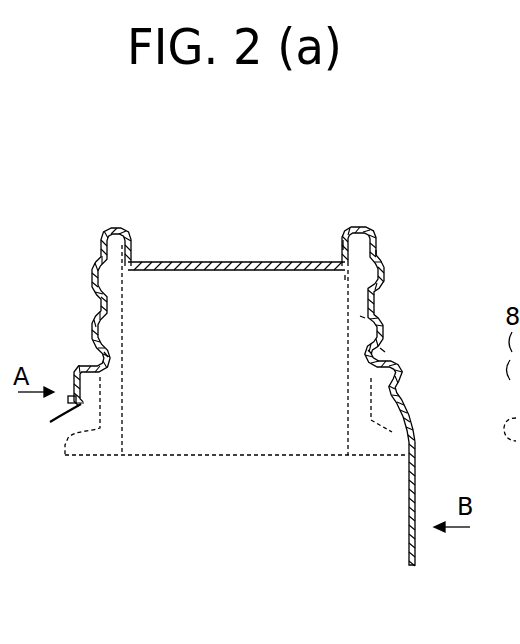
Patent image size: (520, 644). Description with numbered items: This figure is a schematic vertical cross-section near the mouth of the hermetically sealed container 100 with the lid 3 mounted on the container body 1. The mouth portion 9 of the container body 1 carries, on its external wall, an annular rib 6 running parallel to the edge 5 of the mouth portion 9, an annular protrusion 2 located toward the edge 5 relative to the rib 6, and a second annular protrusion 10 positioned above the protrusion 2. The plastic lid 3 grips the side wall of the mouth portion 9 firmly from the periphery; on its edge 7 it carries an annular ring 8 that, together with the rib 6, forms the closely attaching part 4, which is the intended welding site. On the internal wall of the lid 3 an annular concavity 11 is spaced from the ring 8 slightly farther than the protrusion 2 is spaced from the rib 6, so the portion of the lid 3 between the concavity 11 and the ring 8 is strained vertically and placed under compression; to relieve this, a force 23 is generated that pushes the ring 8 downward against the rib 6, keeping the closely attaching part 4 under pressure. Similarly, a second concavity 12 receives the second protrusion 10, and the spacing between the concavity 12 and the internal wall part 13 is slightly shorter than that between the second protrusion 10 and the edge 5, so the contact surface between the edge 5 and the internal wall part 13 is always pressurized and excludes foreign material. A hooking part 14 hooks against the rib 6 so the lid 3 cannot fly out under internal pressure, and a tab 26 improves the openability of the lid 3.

The hermetically sealed container 100 is at (396, 206).
The container body 1 is at (99, 456).
The annular protrusion 2 is at (386, 325).
The lid 3 is at (232, 262).
The closely attaching part 4 is at (78, 366).
The edge of the mouth portion 5 is at (117, 228).
The annular rib 6 is at (101, 392).
The edge of the lid 7 is at (399, 382).
The annular ring 8 is at (385, 350).
The mouth portion 9 is at (128, 300).
The second annular protrusion 10 is at (382, 258).
The annular concavity 11 is at (360, 318).
The second concavity 12 is at (346, 278).
The internal wall part 13 is at (342, 250).
The hooking part 14 is at (65, 412).
The force pressing the rib 23 is at (110, 356).
The tab 26 is at (418, 458).